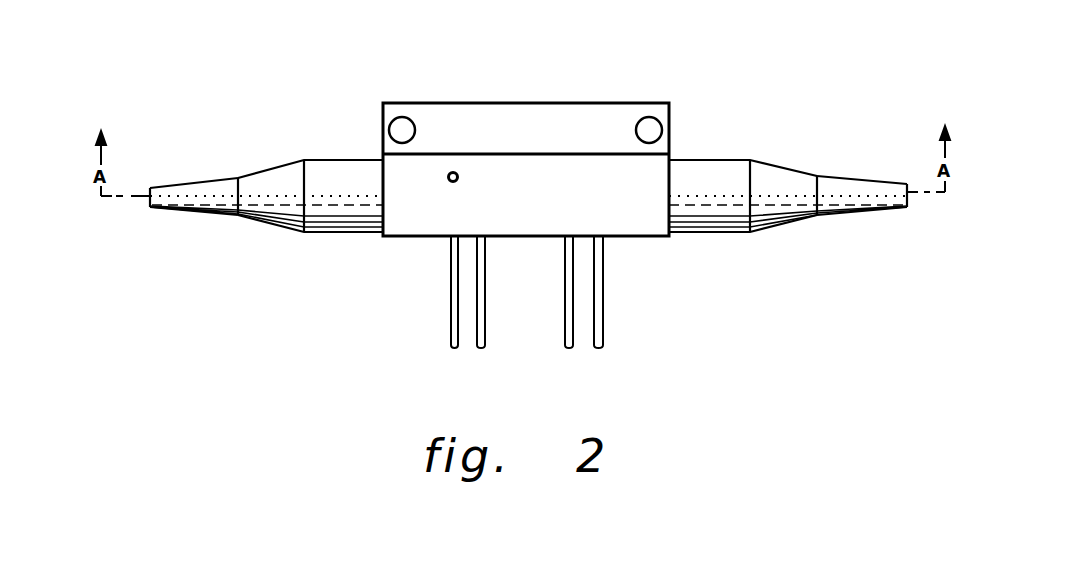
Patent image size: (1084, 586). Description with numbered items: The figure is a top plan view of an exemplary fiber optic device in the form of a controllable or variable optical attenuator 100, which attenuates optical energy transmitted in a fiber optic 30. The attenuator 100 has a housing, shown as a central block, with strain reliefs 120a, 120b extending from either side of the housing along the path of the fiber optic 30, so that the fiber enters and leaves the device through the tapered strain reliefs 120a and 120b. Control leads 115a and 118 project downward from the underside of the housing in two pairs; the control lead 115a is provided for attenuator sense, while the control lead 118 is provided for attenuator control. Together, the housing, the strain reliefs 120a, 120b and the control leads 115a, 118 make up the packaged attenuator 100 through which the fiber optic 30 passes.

The variable optical attenuator 100 is at (788, 97).
The strain relief 120a is at (268, 168).
The strain relief 120b is at (717, 158).
The fiber optic 30 is at (141, 195).
The control lead 115a is at (493, 353).
The control lead 118 is at (612, 353).